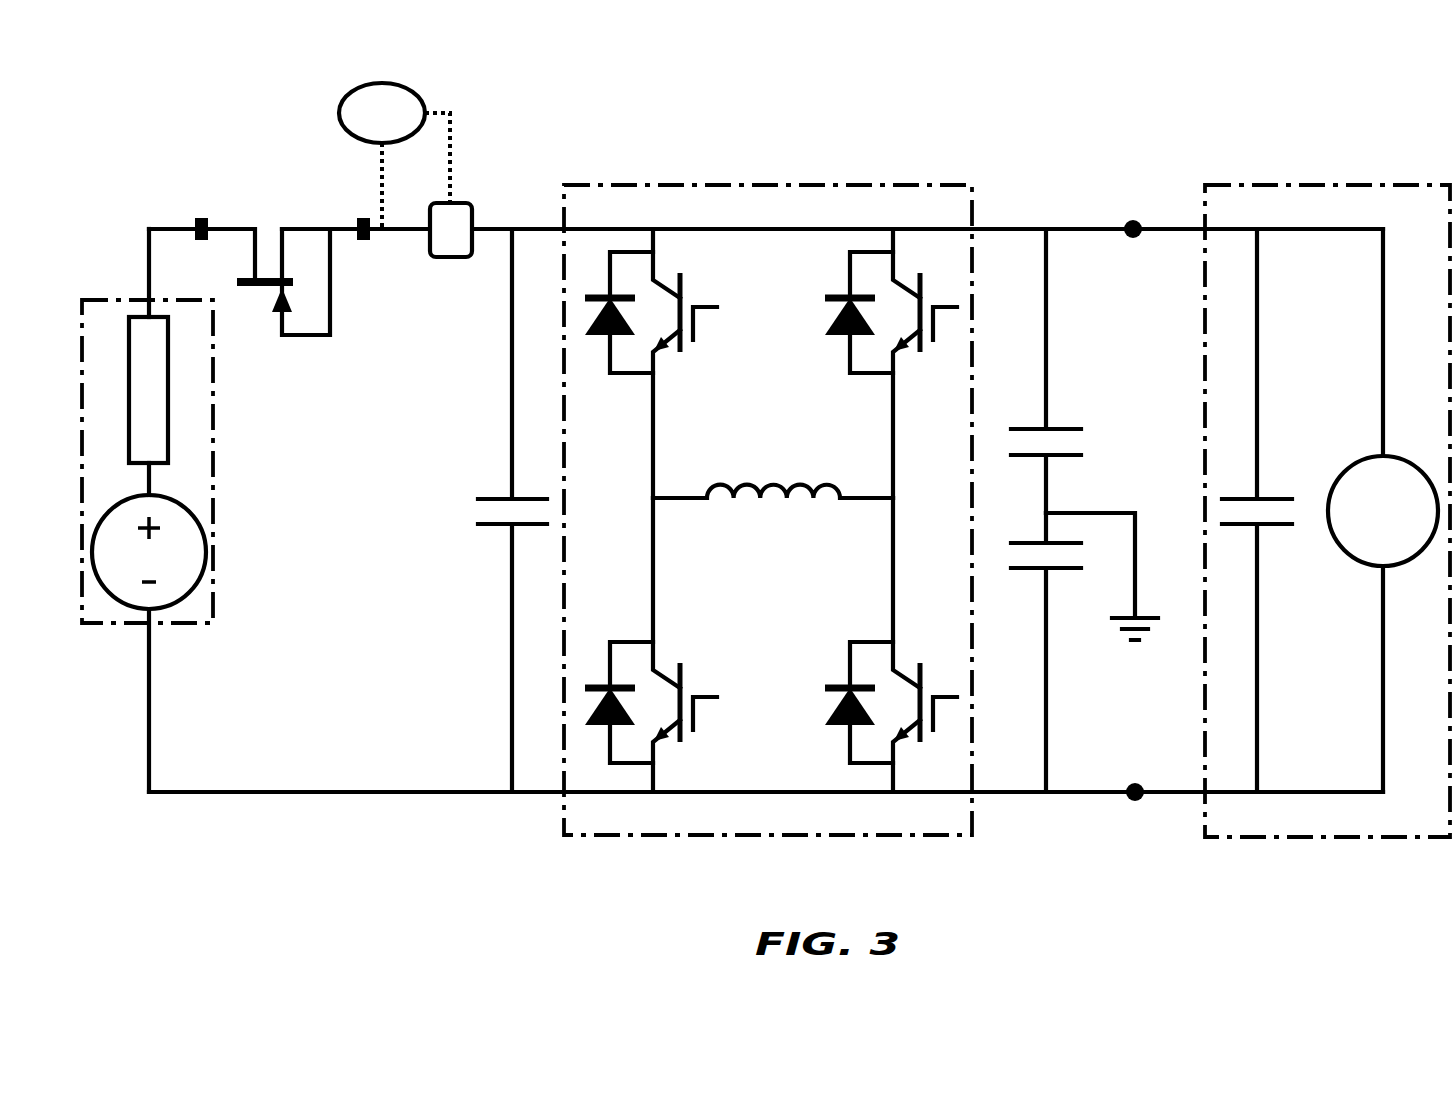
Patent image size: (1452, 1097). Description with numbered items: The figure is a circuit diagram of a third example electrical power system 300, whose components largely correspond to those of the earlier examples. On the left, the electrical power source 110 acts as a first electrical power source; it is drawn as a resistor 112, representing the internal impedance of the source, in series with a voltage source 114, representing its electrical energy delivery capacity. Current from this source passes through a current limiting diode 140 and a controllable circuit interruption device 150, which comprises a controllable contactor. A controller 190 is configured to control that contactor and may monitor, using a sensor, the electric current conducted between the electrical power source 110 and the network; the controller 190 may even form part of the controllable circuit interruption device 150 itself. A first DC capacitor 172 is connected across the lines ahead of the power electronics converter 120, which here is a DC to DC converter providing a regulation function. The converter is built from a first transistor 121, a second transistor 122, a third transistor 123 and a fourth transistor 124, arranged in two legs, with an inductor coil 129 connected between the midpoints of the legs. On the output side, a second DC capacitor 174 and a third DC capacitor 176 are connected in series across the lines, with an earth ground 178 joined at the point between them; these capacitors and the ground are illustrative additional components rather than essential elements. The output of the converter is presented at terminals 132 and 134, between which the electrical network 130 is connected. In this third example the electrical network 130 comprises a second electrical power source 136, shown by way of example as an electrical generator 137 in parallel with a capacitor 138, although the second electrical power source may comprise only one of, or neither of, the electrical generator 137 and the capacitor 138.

The electrical power system 300 is at (148, 94).
The electrical power source 110 is at (207, 546).
The resistor 112 is at (170, 427).
The voltage source 114 is at (206, 541).
The current limiting diode 140 is at (303, 336).
The controllable circuit interruption device 150 is at (453, 258).
The controller 190 is at (340, 105).
The first DC capacitor 172 is at (491, 501).
The power electronics converter 120 is at (735, 185).
The first transistor 121 is at (705, 307).
The second transistor 122 is at (707, 700).
The third transistor 123 is at (843, 333).
The fourth transistor 124 is at (830, 717).
The inductor coil 129 is at (770, 480).
The second DC capacitor 174 is at (1067, 428).
The third DC capacitor 176 is at (1070, 572).
The earth ground 178 is at (1145, 613).
The terminal 132 is at (1133, 226).
The terminal 134 is at (1135, 801).
The electrical network 130 is at (1252, 157).
The second electrical power source 136 is at (1318, 185).
The capacitor 138 is at (1276, 497).
The electrical generator 137 is at (1350, 564).